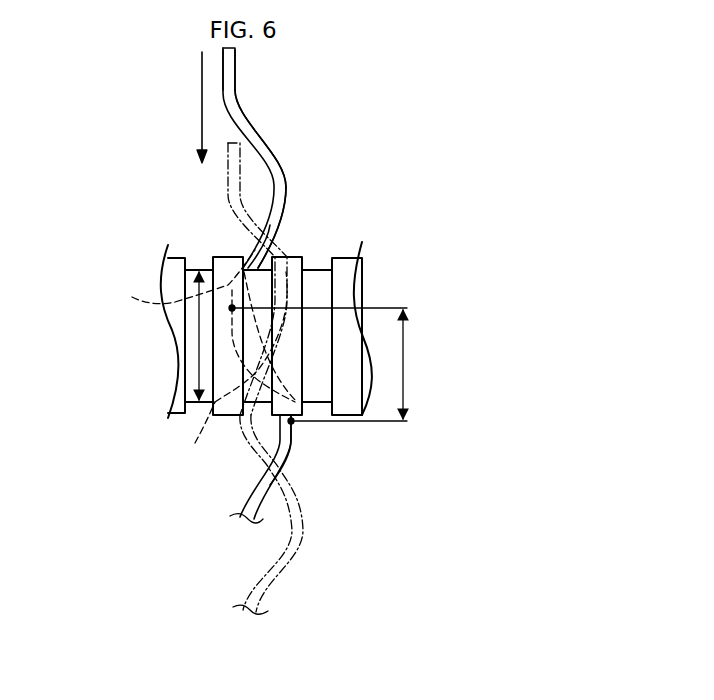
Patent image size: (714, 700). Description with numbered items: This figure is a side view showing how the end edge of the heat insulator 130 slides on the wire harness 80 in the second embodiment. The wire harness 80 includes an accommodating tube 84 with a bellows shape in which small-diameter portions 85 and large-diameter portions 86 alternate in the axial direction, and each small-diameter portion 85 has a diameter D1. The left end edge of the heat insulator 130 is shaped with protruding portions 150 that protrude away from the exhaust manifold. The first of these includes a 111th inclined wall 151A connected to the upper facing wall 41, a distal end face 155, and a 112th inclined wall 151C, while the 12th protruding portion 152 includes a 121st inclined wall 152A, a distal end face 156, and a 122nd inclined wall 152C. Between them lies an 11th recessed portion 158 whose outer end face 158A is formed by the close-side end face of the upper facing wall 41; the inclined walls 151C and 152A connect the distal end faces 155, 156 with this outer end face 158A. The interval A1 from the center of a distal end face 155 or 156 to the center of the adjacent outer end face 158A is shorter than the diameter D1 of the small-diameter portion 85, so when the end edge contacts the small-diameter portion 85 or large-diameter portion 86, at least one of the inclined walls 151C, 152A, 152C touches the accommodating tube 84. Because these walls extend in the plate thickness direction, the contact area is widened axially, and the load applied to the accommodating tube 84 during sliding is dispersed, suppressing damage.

The upper facing wall 41 is at (237, 63).
The 111th inclined wall 151A is at (255, 122).
The protruding portion 150 is at (283, 190).
The distal end face 155 is at (284, 198).
The 11th recessed portion 158 is at (277, 250).
The heat insulator 130 is at (414, 126).
The accommodating tube 84 is at (345, 278).
The interval A1 is at (407, 362).
The 112th inclined wall 151C is at (262, 241).
The large-diameter portion 86 is at (213, 257).
The outer end face 158A is at (185, 326).
The wire harness 80 is at (105, 337).
The diameter D1 is at (197, 362).
The small-diameter portion 85 is at (194, 404).
The 121st inclined wall 152A is at (232, 371).
The 12th protruding portion 152 is at (292, 430).
The distal end face 156 is at (293, 440).
The 122nd inclined wall 152C is at (262, 487).